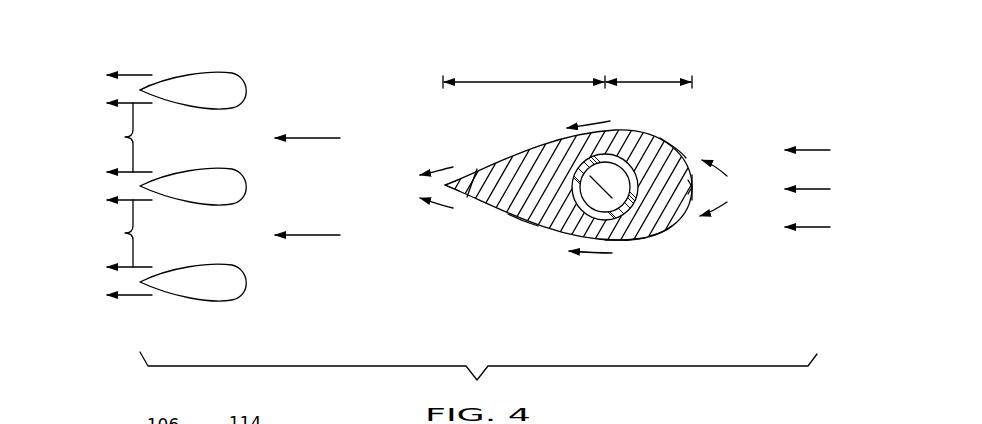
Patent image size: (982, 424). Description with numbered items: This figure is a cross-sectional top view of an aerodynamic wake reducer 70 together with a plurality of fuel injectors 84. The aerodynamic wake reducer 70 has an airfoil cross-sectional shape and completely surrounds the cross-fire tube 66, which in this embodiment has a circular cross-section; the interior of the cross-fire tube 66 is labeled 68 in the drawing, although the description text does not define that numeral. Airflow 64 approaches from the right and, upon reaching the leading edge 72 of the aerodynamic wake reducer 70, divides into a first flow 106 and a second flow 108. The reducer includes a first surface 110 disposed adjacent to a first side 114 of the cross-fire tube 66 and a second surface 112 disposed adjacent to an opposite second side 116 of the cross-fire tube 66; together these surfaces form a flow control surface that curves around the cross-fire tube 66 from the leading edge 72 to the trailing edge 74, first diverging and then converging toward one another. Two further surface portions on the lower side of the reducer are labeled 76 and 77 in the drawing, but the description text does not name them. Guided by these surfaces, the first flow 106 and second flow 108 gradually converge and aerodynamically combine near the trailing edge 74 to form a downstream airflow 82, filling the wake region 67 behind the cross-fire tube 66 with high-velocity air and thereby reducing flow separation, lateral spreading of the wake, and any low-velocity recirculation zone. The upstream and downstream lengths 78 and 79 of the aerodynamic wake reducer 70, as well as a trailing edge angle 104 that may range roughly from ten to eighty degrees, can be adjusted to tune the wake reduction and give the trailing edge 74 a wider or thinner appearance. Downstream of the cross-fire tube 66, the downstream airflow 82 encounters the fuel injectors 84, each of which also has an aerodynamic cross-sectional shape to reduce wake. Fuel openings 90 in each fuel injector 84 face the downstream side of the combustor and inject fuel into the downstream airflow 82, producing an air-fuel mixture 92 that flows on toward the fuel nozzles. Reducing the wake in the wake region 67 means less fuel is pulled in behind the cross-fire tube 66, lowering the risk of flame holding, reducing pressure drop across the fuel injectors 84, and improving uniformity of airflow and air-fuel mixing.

The airflow 64 is at (815, 149).
The cross-fire tube 66 is at (636, 165).
The wake region 67 is at (401, 165).
The hole center / heating tube 68 is at (598, 180).
The aerodynamic wake reducer 70 is at (714, 137).
The leading edge 72 is at (692, 187).
The trailing edge 74 is at (444, 185).
The suction side surface 76 is at (660, 240).
The lower surface 77 is at (522, 226).
The upstream length 78 is at (646, 81).
The downstream length 79 is at (526, 81).
The downstream airflow 82 is at (312, 138).
The fuel injector 84 is at (214, 73).
The fuel opening 90 is at (162, 84).
The air-fuel mixture 92 is at (125, 137).
The trailing edge angle 104 is at (478, 171).
The first flow 106 is at (443, 172).
The second flow 108 is at (438, 203).
The first surface 110 is at (675, 143).
The second surface 112 is at (633, 243).
The first side 114 is at (618, 153).
The second side 116 is at (617, 241).